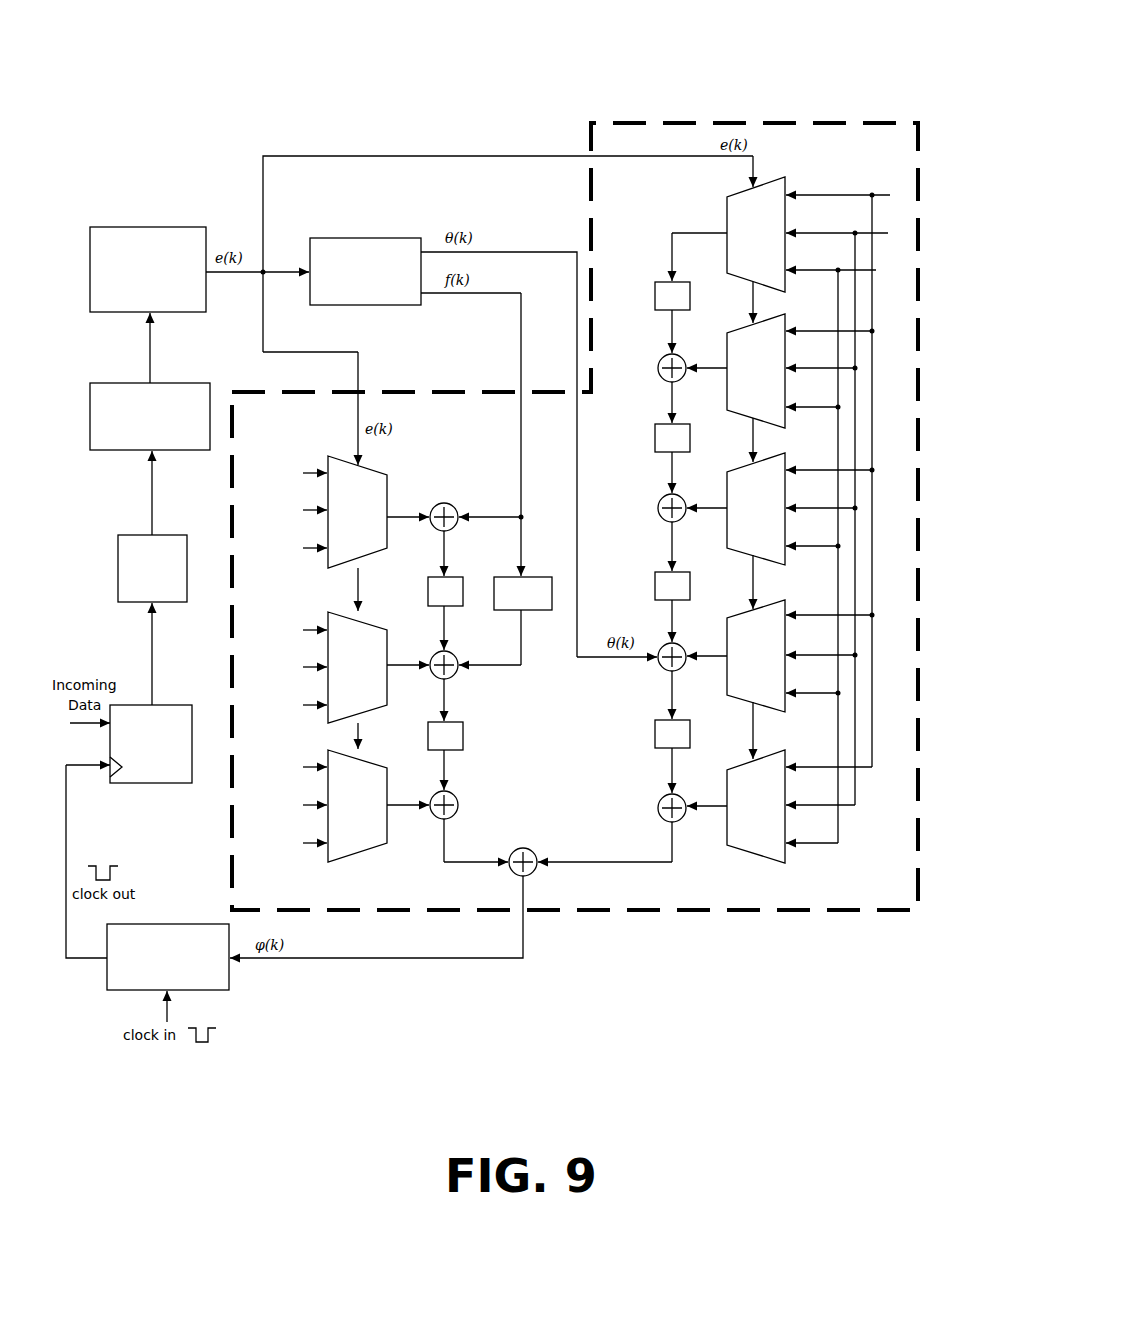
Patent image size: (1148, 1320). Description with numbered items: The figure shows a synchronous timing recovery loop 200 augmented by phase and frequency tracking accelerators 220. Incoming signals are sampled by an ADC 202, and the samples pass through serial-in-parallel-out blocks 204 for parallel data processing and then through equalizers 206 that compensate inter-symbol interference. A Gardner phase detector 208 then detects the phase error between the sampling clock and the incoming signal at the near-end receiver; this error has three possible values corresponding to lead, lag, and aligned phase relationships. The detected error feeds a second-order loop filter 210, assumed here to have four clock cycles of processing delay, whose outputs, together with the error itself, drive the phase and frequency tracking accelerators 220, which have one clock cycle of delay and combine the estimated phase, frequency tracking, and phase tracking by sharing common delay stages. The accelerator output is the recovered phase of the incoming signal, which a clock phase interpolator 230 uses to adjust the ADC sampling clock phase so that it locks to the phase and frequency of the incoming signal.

The timing recovery loop 200 is at (195, 85).
The ADC 202 is at (175, 783).
The serial-in-parallel-out blocks 204 is at (118, 578).
The equalizers 206 is at (90, 386).
The Gardner phase detector 208 is at (120, 228).
The second-order loop filter 210 is at (362, 238).
The phase and frequency tracking accelerators 220 is at (652, 123).
The clock phase interpolator 230 is at (229, 982).